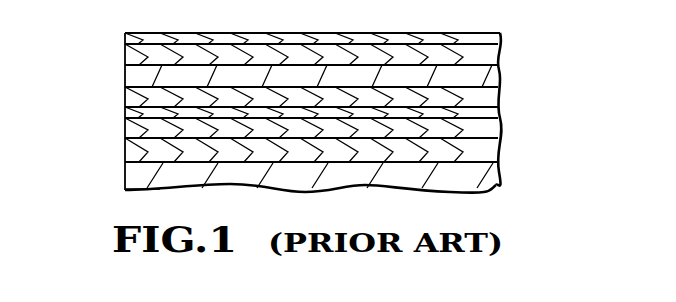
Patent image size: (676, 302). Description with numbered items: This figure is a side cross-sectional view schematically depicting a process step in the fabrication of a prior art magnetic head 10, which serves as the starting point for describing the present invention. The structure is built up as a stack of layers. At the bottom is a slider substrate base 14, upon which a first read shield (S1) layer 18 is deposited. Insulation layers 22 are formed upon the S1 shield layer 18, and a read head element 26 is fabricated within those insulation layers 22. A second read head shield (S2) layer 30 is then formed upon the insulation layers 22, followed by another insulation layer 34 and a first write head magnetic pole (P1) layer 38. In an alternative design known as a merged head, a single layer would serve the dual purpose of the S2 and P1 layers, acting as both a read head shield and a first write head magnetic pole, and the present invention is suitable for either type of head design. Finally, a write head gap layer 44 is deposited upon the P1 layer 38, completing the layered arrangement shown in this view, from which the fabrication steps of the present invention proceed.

The magnetic head 10 is at (552, 27).
The slider substrate base 14 is at (134, 177).
The first read shield (S1) layer 18 is at (125, 156).
The insulation layers 22 is at (125, 113).
The read head element 26 is at (125, 122).
The second read head shield (S2) layer 30 is at (125, 101).
The insulation layer 34 is at (125, 79).
The first write head magnetic pole (P1) layer 38 is at (125, 62).
The write head gap layer 44 is at (125, 33).